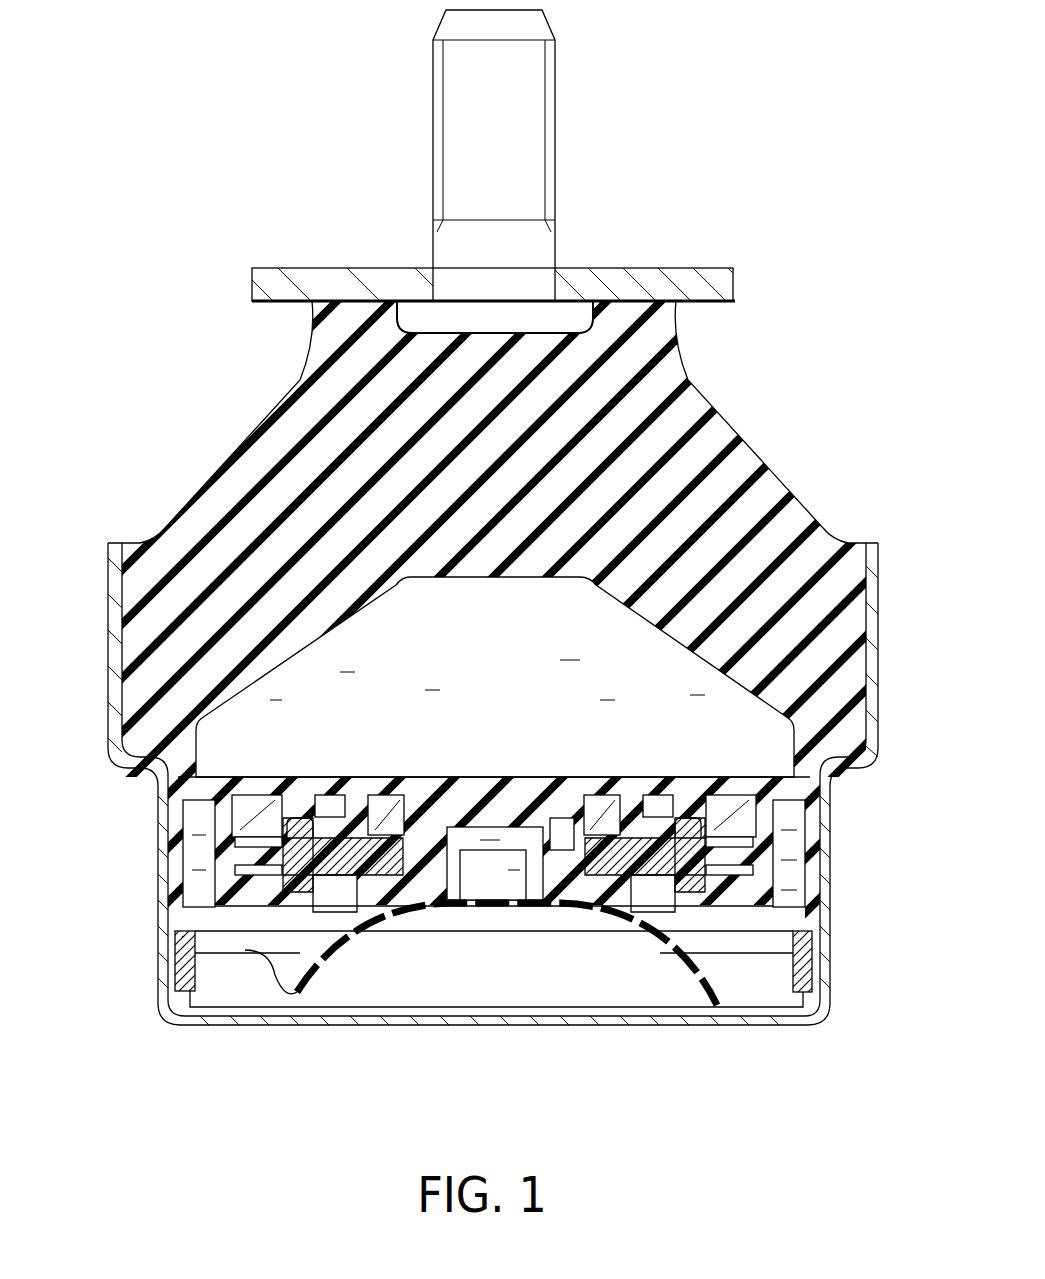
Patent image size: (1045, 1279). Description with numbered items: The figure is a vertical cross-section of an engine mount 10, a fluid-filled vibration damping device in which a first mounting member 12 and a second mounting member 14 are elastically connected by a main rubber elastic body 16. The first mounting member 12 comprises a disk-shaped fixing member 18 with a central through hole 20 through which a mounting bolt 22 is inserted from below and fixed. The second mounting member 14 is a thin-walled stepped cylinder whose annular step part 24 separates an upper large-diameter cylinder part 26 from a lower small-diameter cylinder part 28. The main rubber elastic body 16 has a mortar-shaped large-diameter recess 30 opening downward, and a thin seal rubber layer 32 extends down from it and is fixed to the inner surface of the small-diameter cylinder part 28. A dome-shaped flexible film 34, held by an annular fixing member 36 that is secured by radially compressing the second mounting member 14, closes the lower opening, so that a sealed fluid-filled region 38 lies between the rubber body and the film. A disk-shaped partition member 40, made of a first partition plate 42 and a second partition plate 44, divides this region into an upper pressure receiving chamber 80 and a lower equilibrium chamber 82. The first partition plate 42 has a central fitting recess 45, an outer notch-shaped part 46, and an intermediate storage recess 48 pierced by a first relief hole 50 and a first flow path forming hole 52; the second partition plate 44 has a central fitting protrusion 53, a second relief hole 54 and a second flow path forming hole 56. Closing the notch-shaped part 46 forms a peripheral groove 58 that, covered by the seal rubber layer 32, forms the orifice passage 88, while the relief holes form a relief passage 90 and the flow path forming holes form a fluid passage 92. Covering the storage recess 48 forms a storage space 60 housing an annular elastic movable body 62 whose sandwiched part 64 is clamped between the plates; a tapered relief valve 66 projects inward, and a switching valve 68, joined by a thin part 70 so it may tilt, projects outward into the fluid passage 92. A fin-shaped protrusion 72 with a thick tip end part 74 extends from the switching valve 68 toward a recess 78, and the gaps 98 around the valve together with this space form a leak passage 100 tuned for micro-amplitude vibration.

The engine mount 10 is at (826, 352).
The first mounting member 12 is at (647, 266).
The second mounting member 14 is at (888, 598).
The main rubber elastic body 16 is at (755, 510).
The fixing member 18 is at (313, 292).
The through hole 20 is at (432, 300).
The mounting bolt 22 is at (462, 103).
The step part 24 is at (143, 772).
The large-diameter cylinder part 26 is at (110, 638).
The small-diameter cylinder part 28 is at (160, 942).
The large-diameter recess 30 is at (283, 668).
The seal rubber layer 32 is at (195, 875).
The flexible film 34 is at (335, 957).
The fixing member 36 is at (185, 962).
The fluid-filled region 38 is at (372, 648).
The partition member 40 is at (736, 774).
The first partition plate 42 is at (612, 800).
The second partition plate 44 is at (647, 902).
The fitting recess 45 is at (497, 833).
The notch-shaped part 46 is at (790, 803).
The storage recess 48 is at (333, 845).
The first relief hole 50 is at (390, 812).
The first flow path forming hole 52 is at (298, 815).
The fitting protrusion 53 is at (452, 862).
The second relief hole 54 is at (333, 882).
The second flow path forming hole 56 is at (295, 912).
The peripheral groove 58 is at (165, 898).
The storage space 60 is at (567, 855).
The elastic movable body 62 is at (625, 886).
The sandwiched part 64 is at (646, 800).
The relief valve 66 is at (598, 812).
The switching valve 68 is at (692, 812).
The thin part 70 is at (678, 856).
The fin-shaped protrusion 72 is at (748, 850).
The thick tip end part 74 is at (722, 855).
The recess 78 is at (248, 840).
The pressure receiving chamber 80 is at (435, 666).
The equilibrium chamber 82 is at (687, 981).
The orifice passage 88 is at (200, 870).
The relief passage 90 is at (335, 815).
The fluid passage 92 is at (290, 822).
The gaps 98 is at (262, 812).
The leak passage 100 is at (243, 850).